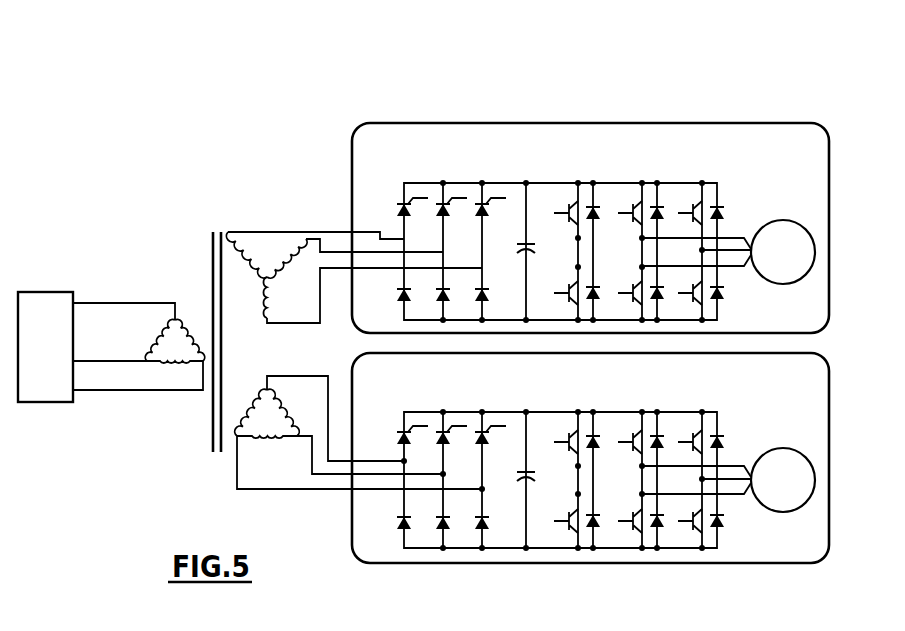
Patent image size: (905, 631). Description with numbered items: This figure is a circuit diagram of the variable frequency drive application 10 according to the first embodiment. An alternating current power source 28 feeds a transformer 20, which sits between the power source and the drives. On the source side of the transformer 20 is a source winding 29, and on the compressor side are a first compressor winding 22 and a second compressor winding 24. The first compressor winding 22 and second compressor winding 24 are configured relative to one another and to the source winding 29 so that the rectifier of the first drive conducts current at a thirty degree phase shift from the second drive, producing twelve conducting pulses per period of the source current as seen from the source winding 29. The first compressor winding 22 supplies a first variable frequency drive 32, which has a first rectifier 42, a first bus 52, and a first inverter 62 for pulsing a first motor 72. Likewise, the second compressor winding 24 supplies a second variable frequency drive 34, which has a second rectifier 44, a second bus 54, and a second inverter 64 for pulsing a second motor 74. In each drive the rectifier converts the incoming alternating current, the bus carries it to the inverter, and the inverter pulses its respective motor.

The variable frequency drive application 10 is at (156, 68).
The transformer 20 is at (184, 446).
The first compressor winding 22 is at (289, 250).
The second compressor winding 24 is at (268, 440).
The alternating current power source 28 is at (64, 361).
The source winding 29 is at (176, 320).
The first variable frequency drive 32 is at (585, 123).
The second variable frequency drive 34 is at (566, 563).
The first rectifier 42 is at (406, 183).
The second rectifier 44 is at (432, 549).
The first bus 52 is at (529, 170).
The second bus 54 is at (527, 549).
The first inverter 62 is at (683, 198).
The second inverter 64 is at (672, 549).
The first motor 72 is at (800, 224).
The second motor 74 is at (800, 452).